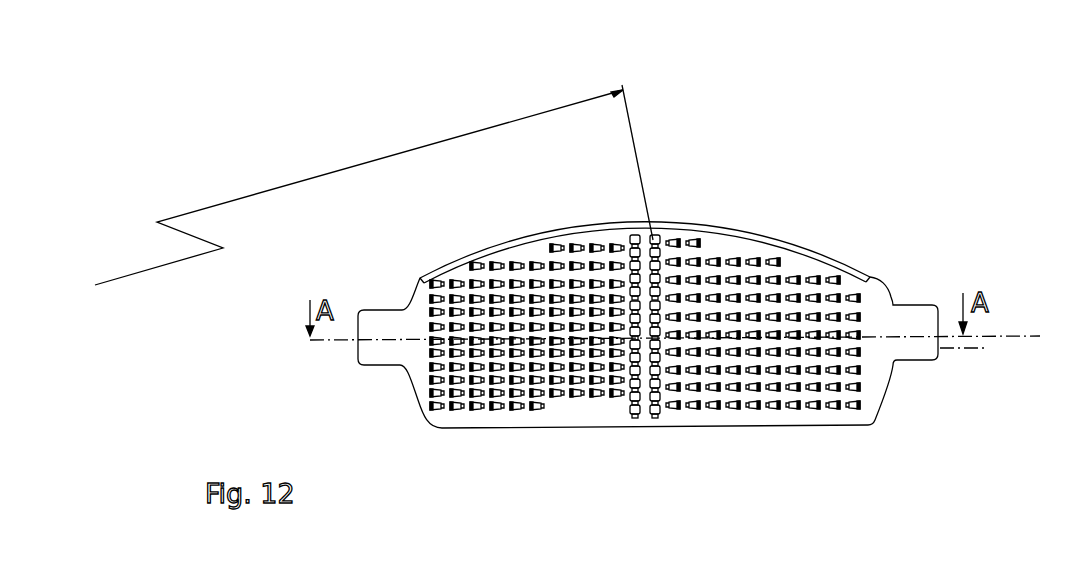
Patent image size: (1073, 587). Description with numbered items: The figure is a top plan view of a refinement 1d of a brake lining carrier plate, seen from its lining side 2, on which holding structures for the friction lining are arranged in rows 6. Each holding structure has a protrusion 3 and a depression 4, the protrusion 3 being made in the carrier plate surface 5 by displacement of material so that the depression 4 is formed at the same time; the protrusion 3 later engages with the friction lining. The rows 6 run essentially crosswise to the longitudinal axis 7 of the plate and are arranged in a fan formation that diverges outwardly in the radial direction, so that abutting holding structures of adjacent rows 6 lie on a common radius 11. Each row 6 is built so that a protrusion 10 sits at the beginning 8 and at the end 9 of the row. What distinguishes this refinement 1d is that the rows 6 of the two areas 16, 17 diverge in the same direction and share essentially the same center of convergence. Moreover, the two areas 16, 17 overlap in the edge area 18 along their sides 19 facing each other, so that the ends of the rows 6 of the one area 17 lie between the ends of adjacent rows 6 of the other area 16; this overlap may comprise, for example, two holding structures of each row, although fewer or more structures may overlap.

The brake lining carrier plate refinement 1d is at (718, 190).
The lining side 2 is at (498, 257).
The protrusion 3 is at (597, 243).
The depression 4 is at (653, 236).
The carrier plate surface 5 is at (528, 252).
The rows 6 is at (861, 298).
The longitudinal axis 7 is at (985, 348).
The beginning of row 8 is at (440, 424).
The end of row 9 is at (866, 292).
The protrusion at row beginning and end 10 is at (431, 312).
The radius 11 is at (270, 190).
The first area 16 is at (551, 421).
The second area 17 is at (712, 422).
The edge area 18 is at (650, 418).
The facing sides 19 is at (630, 420).